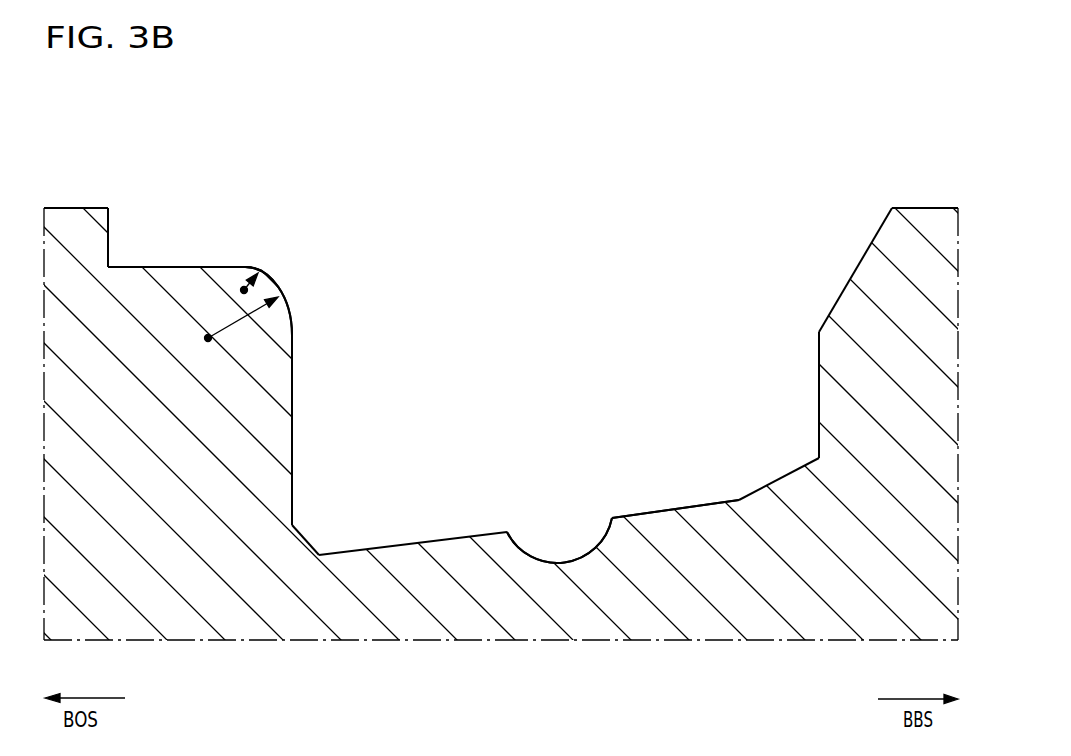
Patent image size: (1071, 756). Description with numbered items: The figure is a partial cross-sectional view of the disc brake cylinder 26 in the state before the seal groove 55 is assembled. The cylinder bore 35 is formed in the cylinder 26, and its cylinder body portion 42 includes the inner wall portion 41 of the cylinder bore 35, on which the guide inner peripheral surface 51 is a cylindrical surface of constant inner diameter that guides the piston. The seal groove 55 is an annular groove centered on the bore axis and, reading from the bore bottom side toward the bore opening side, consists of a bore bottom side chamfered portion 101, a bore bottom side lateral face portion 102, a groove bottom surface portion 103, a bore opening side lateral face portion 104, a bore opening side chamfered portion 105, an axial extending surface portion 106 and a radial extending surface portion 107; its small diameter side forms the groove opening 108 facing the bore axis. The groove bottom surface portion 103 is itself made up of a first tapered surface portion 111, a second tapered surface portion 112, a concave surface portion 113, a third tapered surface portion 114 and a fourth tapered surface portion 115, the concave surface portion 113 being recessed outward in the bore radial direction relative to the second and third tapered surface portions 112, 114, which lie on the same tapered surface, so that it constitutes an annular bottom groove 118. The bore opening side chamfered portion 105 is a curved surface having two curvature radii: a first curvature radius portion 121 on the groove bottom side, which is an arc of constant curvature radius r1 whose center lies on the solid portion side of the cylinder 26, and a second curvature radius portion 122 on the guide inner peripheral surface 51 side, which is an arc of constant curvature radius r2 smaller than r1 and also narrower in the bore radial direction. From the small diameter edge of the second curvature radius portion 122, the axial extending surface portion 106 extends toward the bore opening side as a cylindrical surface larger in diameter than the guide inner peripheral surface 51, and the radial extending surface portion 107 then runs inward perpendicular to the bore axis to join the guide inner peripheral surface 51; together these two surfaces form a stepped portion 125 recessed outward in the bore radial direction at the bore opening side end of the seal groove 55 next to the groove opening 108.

The cylinder 26 is at (448, 610).
The cylinder bore 35 is at (77, 207).
The inner wall portion 41 is at (942, 207).
The cylinder body portion 42 is at (658, 610).
The guide inner peripheral surface 51 is at (912, 207).
The seal groove 55 is at (831, 230).
The bore bottom side chamfered portion 101 is at (848, 277).
The bore bottom side lateral face portion 102 is at (819, 372).
The groove bottom surface portion 103 is at (652, 512).
The bore opening side lateral face portion 104 is at (292, 428).
The bore opening side chamfered portion 105 is at (271, 280).
The axial extending surface portion 106 is at (183, 266).
The radial extending surface portion 107 is at (109, 236).
The groove opening 108 is at (546, 217).
The first tapered surface portion 111 is at (782, 477).
The second tapered surface portion 112 is at (707, 502).
The concave surface portion 113 is at (592, 543).
The third tapered surface portion 114 is at (425, 543).
The fourth tapered surface portion 115 is at (308, 542).
The bottom groove 118 is at (538, 533).
The first curvature radius portion 121 is at (287, 303).
The second curvature radius portion 122 is at (258, 270).
The stepped portion 125 is at (146, 234).
The curvature radius r1 is at (268, 338).
The curvature radius r2 is at (243, 284).